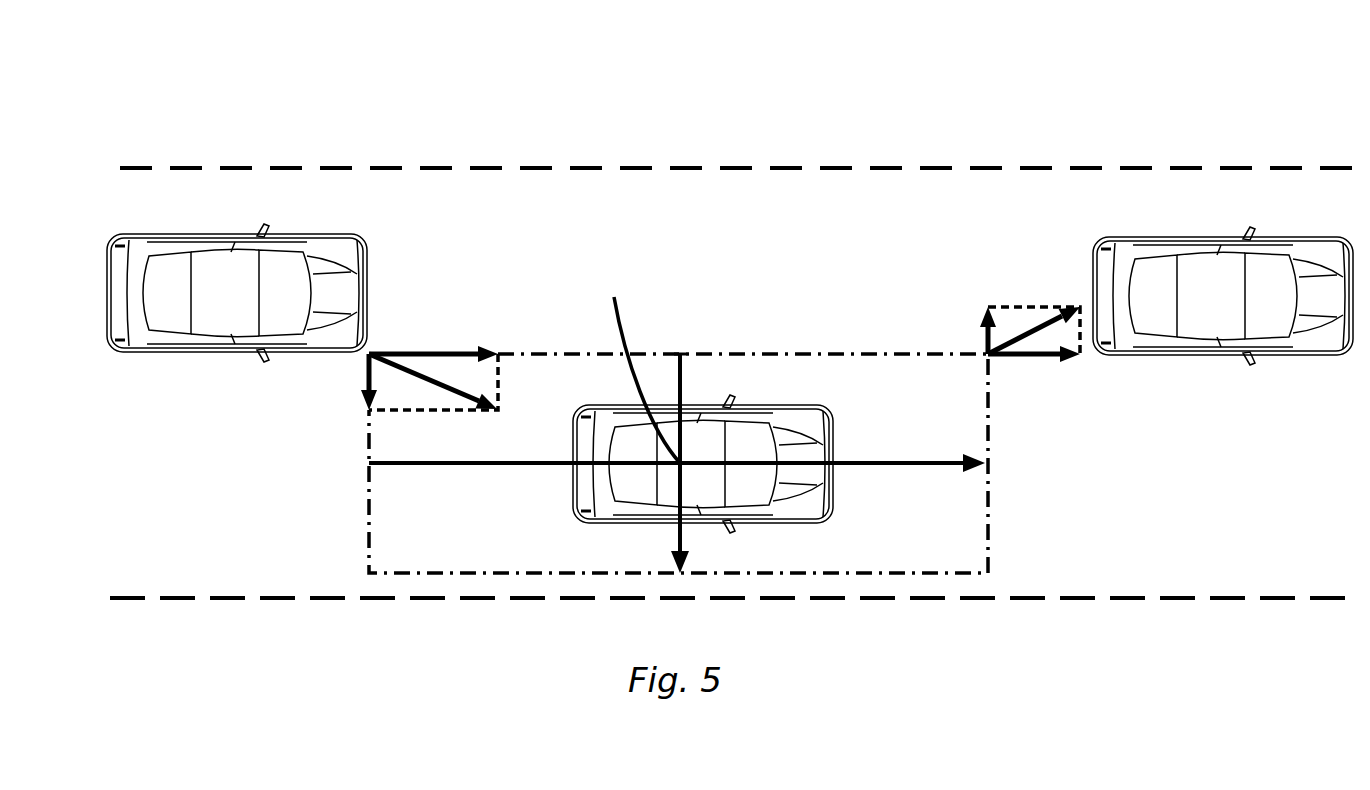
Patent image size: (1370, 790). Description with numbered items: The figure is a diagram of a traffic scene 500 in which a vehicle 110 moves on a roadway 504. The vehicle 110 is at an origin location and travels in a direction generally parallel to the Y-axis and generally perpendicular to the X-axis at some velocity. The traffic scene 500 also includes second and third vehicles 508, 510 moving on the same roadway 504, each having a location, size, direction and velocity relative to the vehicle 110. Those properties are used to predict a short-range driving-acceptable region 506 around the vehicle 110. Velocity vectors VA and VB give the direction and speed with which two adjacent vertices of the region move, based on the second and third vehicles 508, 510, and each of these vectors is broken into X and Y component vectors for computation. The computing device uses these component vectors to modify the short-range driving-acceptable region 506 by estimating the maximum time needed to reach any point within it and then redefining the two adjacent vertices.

The traffic scene 500 is at (730, 313).
The roadway 504 is at (632, 128).
The short-range driving-acceptable region 506 is at (733, 354).
The second vehicle 508 is at (370, 278).
The third vehicle 510 is at (1093, 288).
The vehicle 110 is at (570, 477).